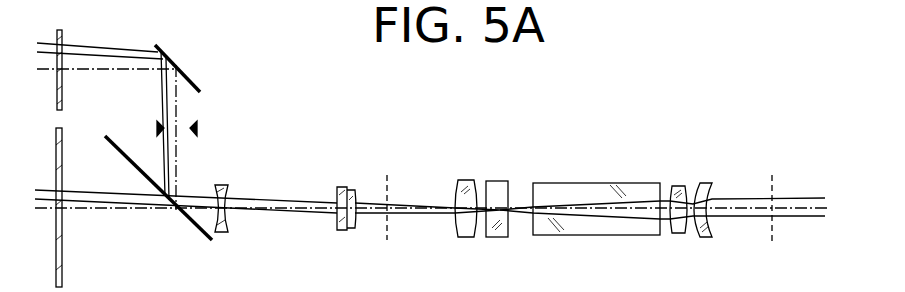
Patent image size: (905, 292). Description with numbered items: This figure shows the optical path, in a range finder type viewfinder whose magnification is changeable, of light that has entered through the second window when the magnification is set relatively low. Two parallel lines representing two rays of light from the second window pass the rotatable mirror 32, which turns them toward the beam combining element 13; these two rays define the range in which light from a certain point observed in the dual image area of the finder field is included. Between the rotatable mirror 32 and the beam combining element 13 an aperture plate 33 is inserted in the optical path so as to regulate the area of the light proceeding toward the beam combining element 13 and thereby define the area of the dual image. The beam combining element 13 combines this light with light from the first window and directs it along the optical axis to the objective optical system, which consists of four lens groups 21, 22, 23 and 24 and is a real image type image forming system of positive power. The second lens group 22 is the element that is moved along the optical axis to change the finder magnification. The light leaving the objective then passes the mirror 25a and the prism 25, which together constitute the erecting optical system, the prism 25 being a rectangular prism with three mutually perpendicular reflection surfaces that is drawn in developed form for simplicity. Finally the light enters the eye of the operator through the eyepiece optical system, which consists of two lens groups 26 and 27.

The beam combining element 13 is at (197, 233).
The first lens group 21 is at (221, 185).
The second lens group 22 is at (346, 187).
The third lens group 23 is at (462, 180).
The fourth lens group 24 is at (500, 181).
The prism 25 is at (590, 183).
The mirror 25a is at (390, 172).
The first eyepiece lens group 26 is at (677, 186).
The second eyepiece lens group 27 is at (700, 183).
The rotatable mirror 32 is at (188, 79).
The aperture plate 33 is at (198, 128).